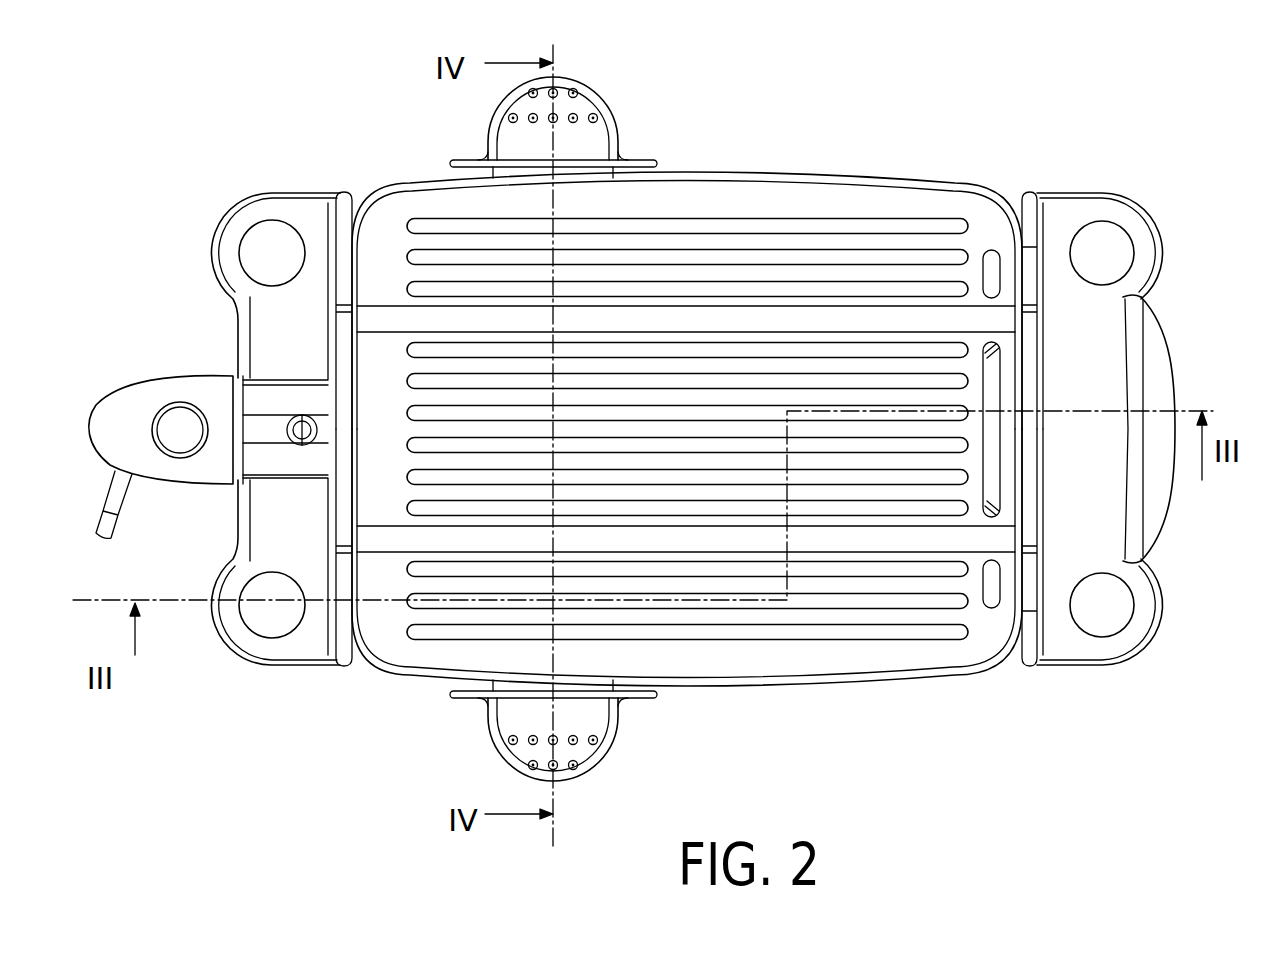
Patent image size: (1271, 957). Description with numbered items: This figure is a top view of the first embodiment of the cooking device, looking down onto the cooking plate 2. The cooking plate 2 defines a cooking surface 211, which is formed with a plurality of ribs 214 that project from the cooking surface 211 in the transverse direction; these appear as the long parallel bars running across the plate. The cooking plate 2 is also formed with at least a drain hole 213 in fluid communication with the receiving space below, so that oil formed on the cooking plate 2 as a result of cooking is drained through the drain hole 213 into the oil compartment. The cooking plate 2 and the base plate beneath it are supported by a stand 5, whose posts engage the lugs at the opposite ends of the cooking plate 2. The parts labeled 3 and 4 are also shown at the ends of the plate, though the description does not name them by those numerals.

The cooking plate 2 is at (870, 680).
The cooking surface 211 is at (870, 205).
The drain hole 213 is at (996, 268).
The ribs 214 is at (962, 225).
The foot / stand 3 is at (623, 108).
The handle 4 is at (1186, 352).
The stand 5 is at (1133, 660).